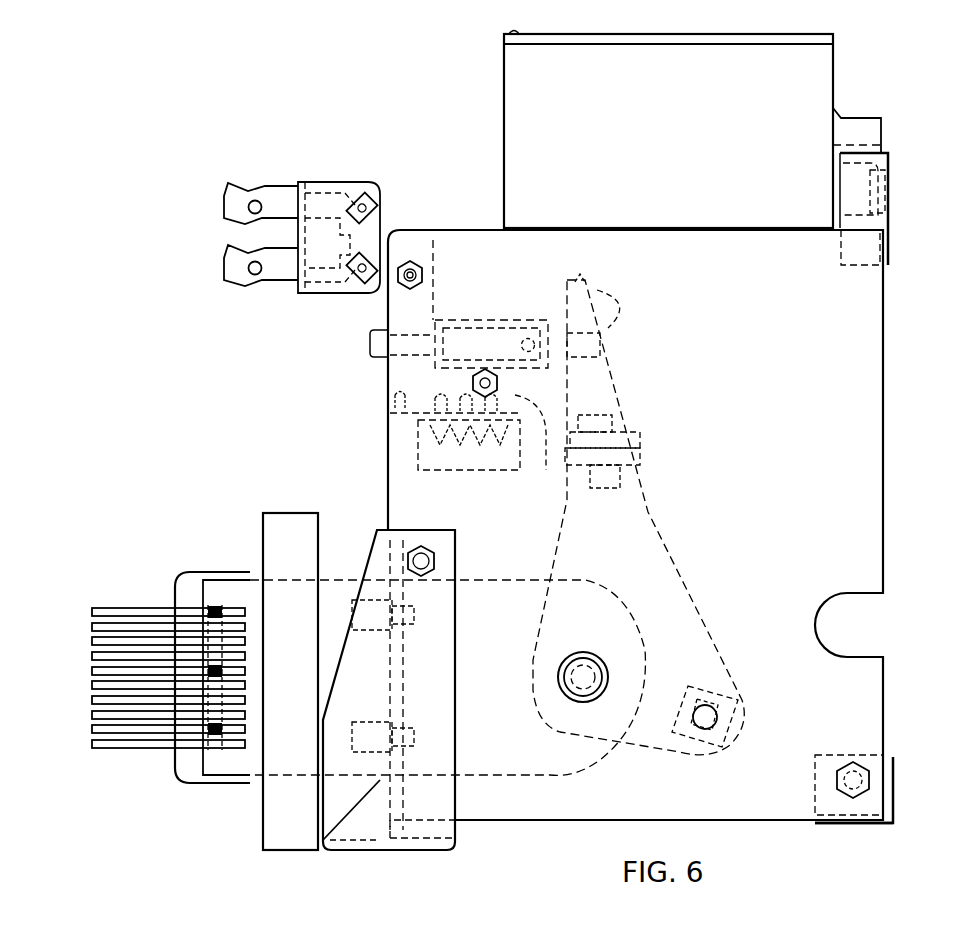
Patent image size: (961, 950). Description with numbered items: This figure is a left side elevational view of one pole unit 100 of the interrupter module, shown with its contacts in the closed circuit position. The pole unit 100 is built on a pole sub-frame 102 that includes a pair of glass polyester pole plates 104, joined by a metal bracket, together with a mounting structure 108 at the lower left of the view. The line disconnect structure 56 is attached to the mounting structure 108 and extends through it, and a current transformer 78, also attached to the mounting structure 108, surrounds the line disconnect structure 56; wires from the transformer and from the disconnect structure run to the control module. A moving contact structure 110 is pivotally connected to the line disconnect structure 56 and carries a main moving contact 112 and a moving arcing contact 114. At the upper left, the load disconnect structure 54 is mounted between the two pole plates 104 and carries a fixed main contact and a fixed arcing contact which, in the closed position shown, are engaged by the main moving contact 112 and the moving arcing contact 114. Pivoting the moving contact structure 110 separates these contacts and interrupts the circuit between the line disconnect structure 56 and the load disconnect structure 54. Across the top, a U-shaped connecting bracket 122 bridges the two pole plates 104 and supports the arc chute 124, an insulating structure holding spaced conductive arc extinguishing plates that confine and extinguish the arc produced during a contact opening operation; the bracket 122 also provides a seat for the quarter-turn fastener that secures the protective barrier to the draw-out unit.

The pole unit 100 is at (699, 20).
The pole sub-frame 102 is at (949, 744).
The pole plates 104 is at (862, 378).
The mounting structure 108 is at (458, 848).
The moving contact structure 110 is at (650, 515).
The main moving contact 112 is at (560, 482).
The moving arcing contact 114 is at (601, 298).
The U-shaped connecting bracket 122 is at (880, 216).
The arc chute 124 is at (836, 70).
The load disconnect structure 54 is at (324, 183).
The line disconnect structure 56 is at (229, 782).
The current transformer 78 is at (288, 513).